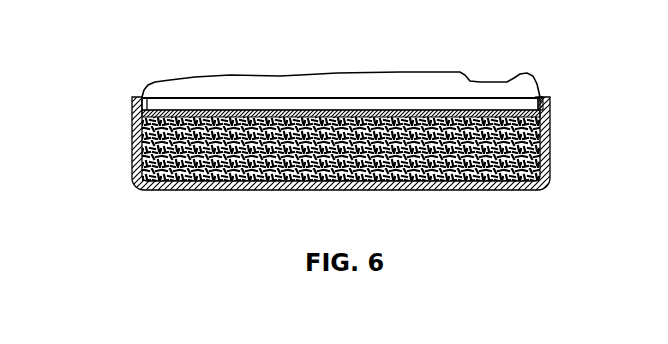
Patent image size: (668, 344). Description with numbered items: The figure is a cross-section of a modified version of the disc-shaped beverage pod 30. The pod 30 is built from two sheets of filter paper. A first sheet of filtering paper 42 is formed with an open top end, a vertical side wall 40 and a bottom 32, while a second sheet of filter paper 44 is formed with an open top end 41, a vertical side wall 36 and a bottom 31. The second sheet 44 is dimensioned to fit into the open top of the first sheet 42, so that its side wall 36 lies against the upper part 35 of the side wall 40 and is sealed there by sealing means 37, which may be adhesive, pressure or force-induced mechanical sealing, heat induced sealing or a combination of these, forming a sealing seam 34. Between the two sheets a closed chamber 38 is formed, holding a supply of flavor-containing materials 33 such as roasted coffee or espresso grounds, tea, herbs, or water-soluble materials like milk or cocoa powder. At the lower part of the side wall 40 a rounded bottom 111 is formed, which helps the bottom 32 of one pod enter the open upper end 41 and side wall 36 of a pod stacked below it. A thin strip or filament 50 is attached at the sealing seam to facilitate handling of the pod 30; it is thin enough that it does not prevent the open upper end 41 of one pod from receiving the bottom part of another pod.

The beverage pod 30 is at (122, 89).
The bottom of second sheet 31 is at (222, 112).
The bottom of first sheet 32 is at (198, 190).
The flavor-containing materials 33 is at (323, 192).
The sealing seam 34 is at (551, 115).
The upper part of vertical side wall 35 is at (552, 103).
The vertical side wall of second sheet 36 is at (540, 97).
The sealing means 37 is at (545, 97).
The closed chamber 38 is at (128, 175).
The vertical side wall of first sheet 40 is at (132, 140).
The open top end of second sheet 41 is at (277, 103).
The first sheet of filtering paper 42 is at (405, 190).
The second sheet of filter paper 44 is at (410, 109).
The strip or filament 50 is at (340, 73).
The rounded bottom 111 is at (545, 190).